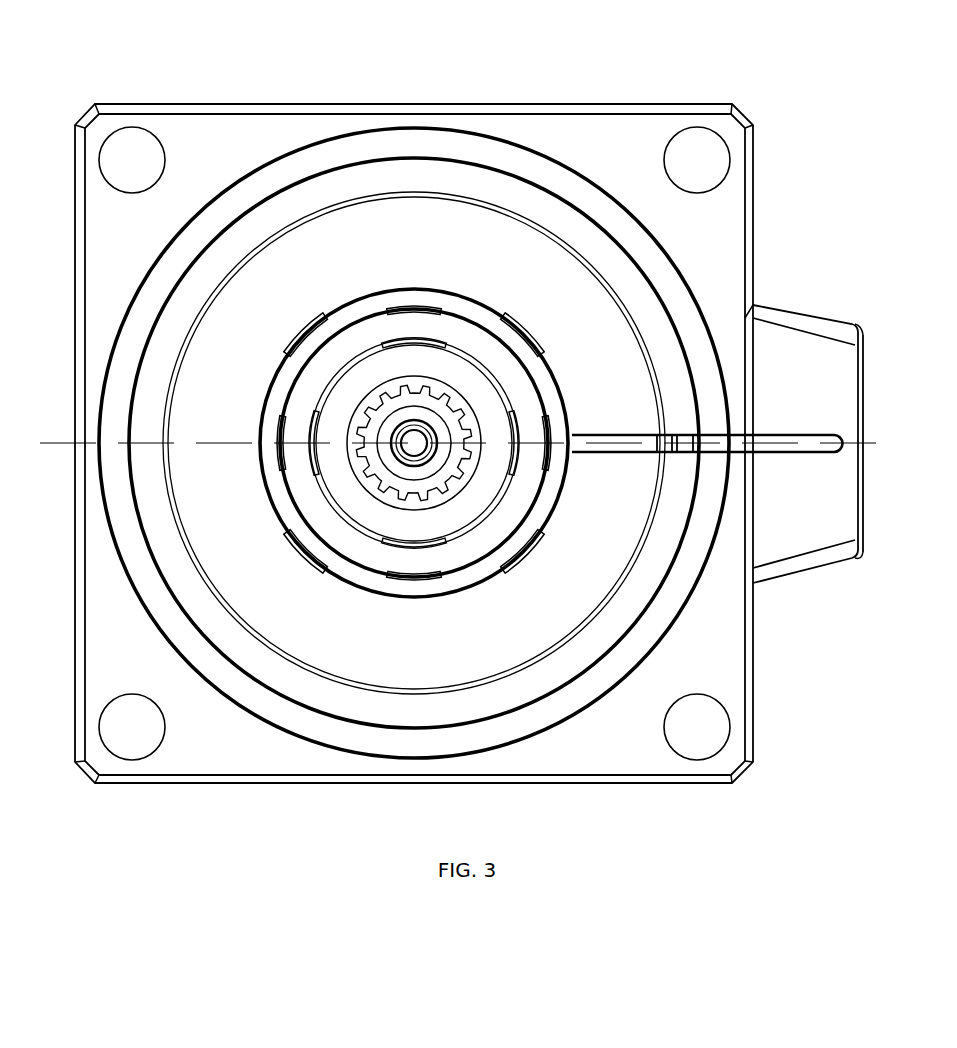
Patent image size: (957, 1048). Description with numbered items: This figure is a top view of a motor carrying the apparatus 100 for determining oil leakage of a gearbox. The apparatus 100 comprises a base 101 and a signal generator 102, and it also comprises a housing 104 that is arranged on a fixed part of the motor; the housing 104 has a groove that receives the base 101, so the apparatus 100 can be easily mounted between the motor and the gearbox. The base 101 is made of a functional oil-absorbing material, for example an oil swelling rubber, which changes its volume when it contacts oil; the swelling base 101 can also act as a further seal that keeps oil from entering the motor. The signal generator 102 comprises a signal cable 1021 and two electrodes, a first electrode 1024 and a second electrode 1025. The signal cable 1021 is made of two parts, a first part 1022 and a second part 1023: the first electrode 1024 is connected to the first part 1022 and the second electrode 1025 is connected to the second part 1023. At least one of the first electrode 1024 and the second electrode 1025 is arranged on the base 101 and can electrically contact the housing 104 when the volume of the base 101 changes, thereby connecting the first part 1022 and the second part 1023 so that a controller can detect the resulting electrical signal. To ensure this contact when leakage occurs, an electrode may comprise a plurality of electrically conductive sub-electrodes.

The apparatus 100 is at (436, 51).
The housing 104 is at (752, 200).
The base 101 is at (348, 318).
The signal generator 102 is at (290, 558).
The signal cable 1021 is at (607, 462).
The first part 1022 is at (578, 437).
The second part 1023 is at (773, 445).
The first electrode 1024 is at (412, 582).
The second electrode 1025 is at (517, 320).